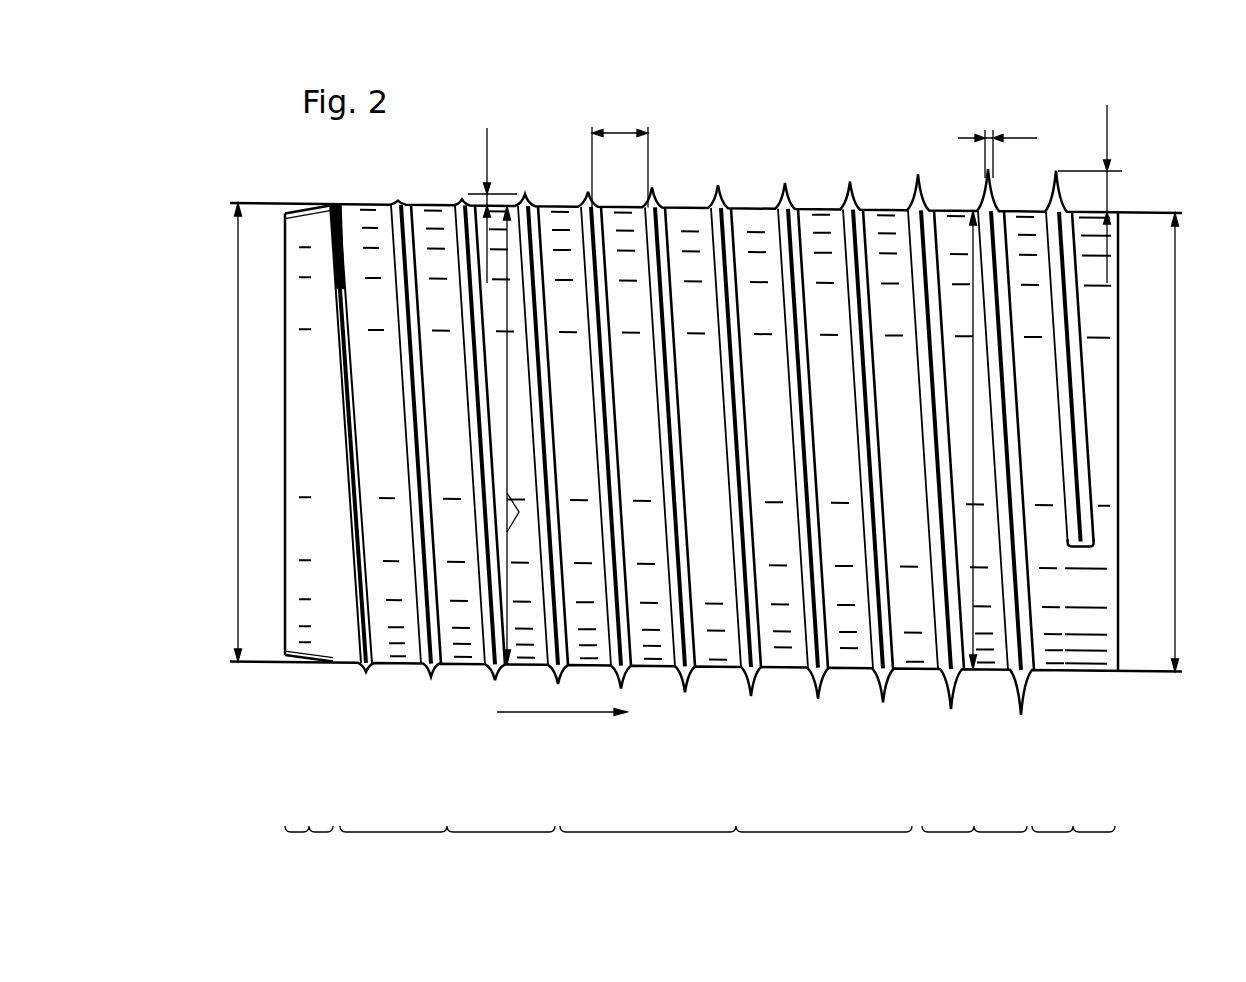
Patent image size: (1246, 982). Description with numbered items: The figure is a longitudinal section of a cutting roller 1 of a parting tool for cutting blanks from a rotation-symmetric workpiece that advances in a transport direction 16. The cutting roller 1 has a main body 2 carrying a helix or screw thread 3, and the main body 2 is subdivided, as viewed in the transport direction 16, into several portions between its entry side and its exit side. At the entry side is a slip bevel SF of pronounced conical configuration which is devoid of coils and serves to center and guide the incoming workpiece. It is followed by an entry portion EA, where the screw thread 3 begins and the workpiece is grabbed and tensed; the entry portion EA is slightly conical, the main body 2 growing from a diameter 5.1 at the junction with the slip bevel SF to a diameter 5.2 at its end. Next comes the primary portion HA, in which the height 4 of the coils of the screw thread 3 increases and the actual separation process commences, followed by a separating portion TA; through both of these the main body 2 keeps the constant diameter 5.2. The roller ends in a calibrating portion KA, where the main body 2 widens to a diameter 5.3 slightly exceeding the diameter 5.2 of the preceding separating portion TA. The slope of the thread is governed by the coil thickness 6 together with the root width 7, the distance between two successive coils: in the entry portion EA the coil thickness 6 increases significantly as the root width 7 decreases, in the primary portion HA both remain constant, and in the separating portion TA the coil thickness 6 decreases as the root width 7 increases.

The cutting roller 1 is at (1088, 90).
The main body 2 is at (1120, 312).
The screw thread 3 is at (350, 527).
The height of the coils 4 is at (792, 194).
The diameter 5.1 is at (237, 432).
The diameter 5.2 is at (510, 507).
The diameter 5.3 is at (1177, 440).
The coil thickness 6 is at (997, 137).
The root width 7 is at (620, 148).
The transport direction 16 is at (576, 710).
The slip bevel SF is at (309, 851).
The entry portion EA is at (447, 851).
The primary portion HA is at (736, 851).
The separating portion TA is at (974, 851).
The calibrating portion KA is at (1073, 851).